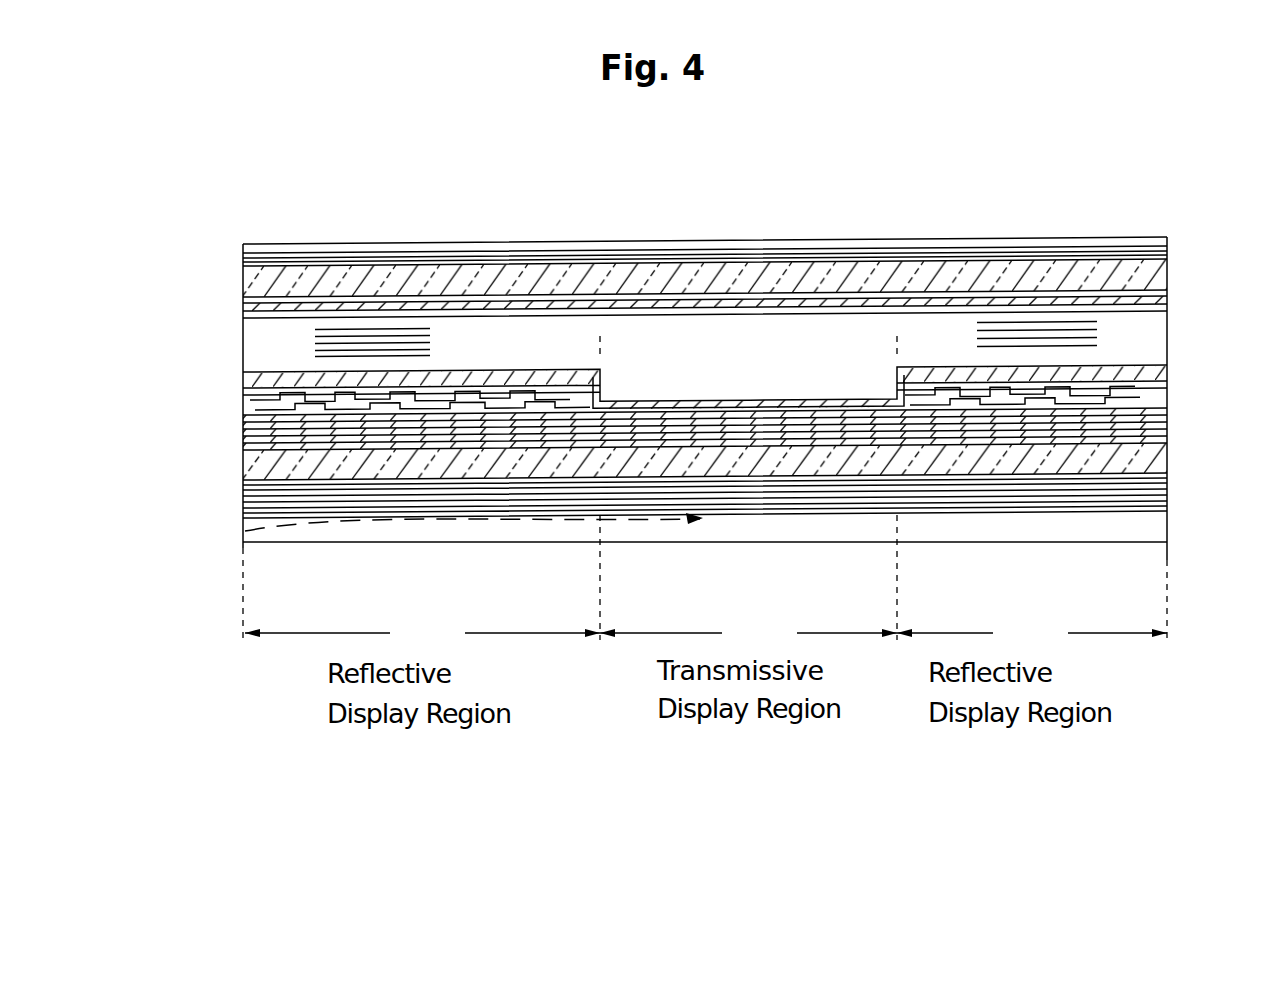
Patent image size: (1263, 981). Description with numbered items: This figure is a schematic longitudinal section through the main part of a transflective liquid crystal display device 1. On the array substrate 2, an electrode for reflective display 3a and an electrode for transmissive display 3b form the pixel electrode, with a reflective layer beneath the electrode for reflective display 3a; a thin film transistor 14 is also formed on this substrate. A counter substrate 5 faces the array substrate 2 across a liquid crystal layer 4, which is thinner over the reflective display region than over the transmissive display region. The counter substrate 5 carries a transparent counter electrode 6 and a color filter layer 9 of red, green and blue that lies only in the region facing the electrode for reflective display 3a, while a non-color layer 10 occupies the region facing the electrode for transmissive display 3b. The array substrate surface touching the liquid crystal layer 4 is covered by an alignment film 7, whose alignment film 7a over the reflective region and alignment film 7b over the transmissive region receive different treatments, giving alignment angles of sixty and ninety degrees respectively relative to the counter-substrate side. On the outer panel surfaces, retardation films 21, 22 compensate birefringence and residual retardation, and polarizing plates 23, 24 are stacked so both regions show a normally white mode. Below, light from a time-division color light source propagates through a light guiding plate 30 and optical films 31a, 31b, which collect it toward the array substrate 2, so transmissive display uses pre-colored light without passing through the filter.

The liquid crystal display device 1 is at (1140, 216).
The array substrate 2 is at (1178, 404).
The electrode for reflective display 3a is at (243, 378).
The electrode for transmissive display 3b is at (823, 406).
The liquid crystal layer 4 is at (1178, 314).
The counter substrate 5 is at (1178, 262).
The counter electrode 6 is at (243, 324).
The alignment film 7 is at (800, 354).
The alignment film for the reflective display region 7a is at (600, 372).
The alignment film for the transmissive display region 7b is at (727, 406).
The color filter layer 9 is at (243, 305).
The non-color layer 10 is at (633, 314).
The thin film transistor 14 is at (243, 415).
The retardation film 21 is at (243, 484).
The retardation film 22 is at (243, 268).
The polarizing plate 23 is at (243, 493).
The polarizing plate 24 is at (243, 253).
The light guiding plate 30 is at (243, 552).
The optical film 31a is at (243, 538).
The optical film 31b is at (243, 511).